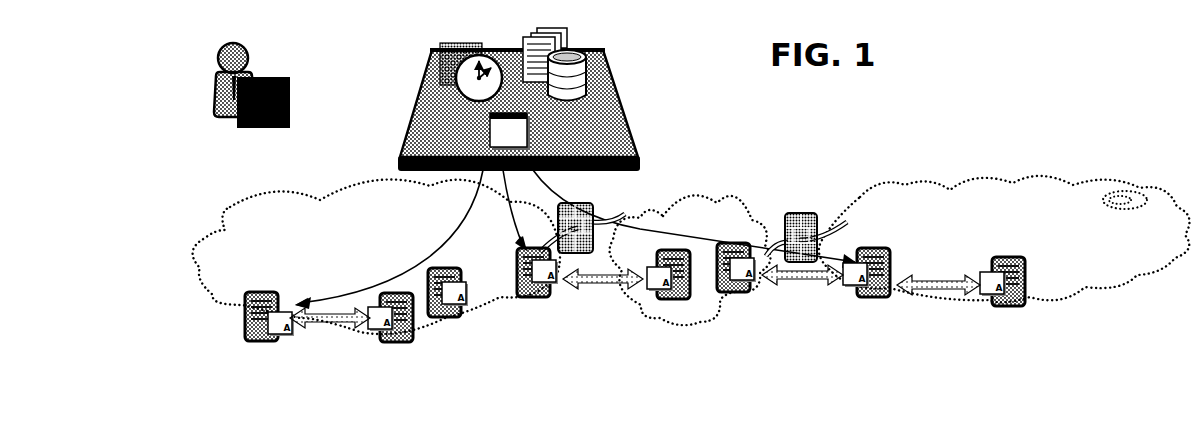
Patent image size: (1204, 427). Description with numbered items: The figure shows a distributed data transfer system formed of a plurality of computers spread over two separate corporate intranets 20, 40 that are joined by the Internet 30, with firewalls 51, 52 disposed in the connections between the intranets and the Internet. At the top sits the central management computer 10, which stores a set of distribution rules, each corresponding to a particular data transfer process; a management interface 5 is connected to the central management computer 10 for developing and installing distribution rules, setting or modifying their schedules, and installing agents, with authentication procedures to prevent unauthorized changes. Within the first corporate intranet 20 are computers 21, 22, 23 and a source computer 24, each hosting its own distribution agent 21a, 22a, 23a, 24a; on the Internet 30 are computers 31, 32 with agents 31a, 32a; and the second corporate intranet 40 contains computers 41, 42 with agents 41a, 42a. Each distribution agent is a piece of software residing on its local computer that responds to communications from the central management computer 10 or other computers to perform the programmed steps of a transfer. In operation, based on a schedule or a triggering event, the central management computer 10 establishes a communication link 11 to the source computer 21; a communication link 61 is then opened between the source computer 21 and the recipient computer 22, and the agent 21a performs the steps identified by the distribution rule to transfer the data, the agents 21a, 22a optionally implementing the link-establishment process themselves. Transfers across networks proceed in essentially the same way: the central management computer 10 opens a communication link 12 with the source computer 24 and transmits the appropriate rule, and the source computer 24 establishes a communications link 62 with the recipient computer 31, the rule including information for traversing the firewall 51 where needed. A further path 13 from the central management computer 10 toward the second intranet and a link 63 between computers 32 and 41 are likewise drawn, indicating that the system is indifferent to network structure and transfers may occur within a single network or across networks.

The management interface 5 is at (216, 74).
The central management computer 10 is at (612, 78).
The communication link 11 is at (452, 232).
The communication link 12 is at (515, 222).
The agent dispatch path through firewall to remote intranet 13 is at (552, 191).
The corporate intranet 20 is at (228, 214).
The source computer 21 is at (248, 338).
The distribution agent 21a is at (283, 334).
The recipient computer 22 is at (397, 342).
The distribution agent 22a is at (374, 332).
The computer 23 is at (452, 318).
The distribution agent 23a is at (468, 306).
The source computer 24 is at (536, 300).
The distribution agent 24a is at (551, 288).
The Internet 30 is at (683, 200).
The recipient computer 31 is at (672, 300).
The distribution agent 31a is at (651, 290).
The computer 32 is at (723, 296).
The distribution agent 32a is at (748, 282).
The corporate intranet 40 is at (986, 180).
The computer 41 is at (884, 298).
The distribution agent 41a is at (852, 290).
The computer 42 is at (1020, 306).
The distribution agent 42a is at (990, 298).
The firewall 51 is at (574, 240).
The firewall 52 is at (795, 212).
The communication link 61 is at (326, 330).
The communications link 62 is at (609, 281).
The communication link between agents 63 is at (801, 286).